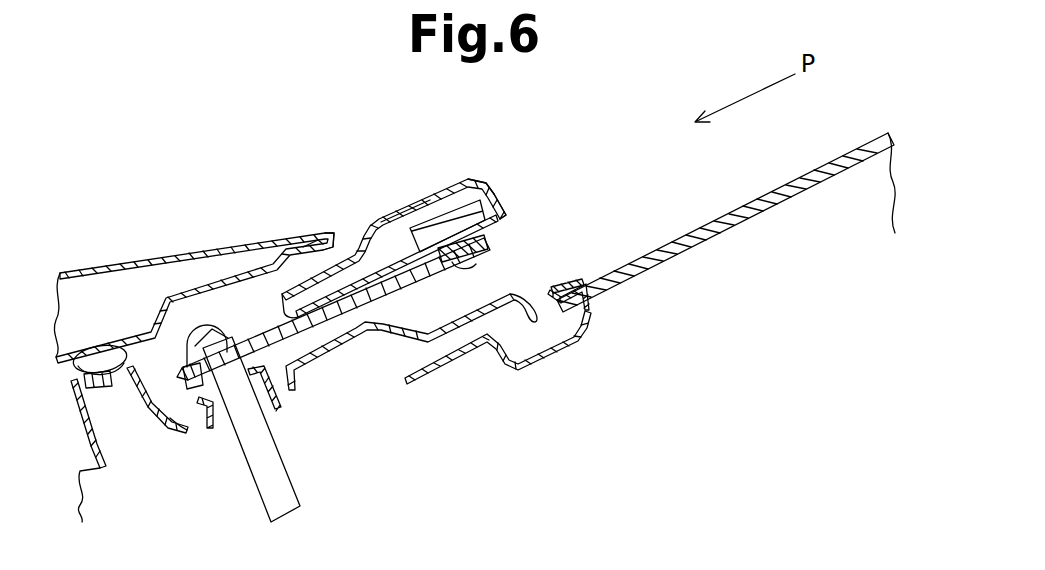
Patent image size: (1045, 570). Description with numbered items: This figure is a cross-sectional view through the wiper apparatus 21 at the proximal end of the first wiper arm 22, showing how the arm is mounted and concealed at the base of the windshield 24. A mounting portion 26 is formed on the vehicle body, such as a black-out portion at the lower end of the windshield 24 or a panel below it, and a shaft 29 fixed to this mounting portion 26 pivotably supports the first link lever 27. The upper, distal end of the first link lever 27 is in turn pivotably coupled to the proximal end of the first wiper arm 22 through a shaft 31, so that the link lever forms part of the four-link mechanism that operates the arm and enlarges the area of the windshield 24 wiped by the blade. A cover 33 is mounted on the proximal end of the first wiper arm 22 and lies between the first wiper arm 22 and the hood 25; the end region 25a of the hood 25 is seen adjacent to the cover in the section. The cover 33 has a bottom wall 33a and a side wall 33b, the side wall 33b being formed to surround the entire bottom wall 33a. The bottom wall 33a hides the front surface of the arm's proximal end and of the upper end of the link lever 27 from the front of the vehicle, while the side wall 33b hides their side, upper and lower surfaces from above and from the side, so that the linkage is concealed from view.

The wiper apparatus 21 is at (479, 183).
The first wiper arm 22 is at (457, 213).
The windshield 24 is at (757, 197).
The hood 25 is at (197, 251).
The folded end of cover plate 25a is at (332, 231).
The mounting portion 26 is at (327, 355).
The first link lever 27 is at (418, 285).
The shaft 29 is at (253, 479).
The shaft 31 is at (480, 262).
The cover 33 is at (392, 222).
The bottom wall 33a is at (427, 200).
The side wall 33b is at (507, 198).